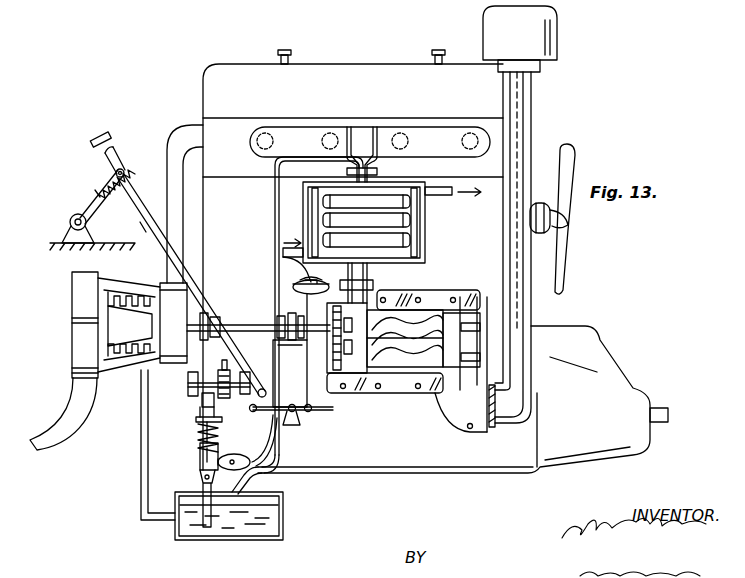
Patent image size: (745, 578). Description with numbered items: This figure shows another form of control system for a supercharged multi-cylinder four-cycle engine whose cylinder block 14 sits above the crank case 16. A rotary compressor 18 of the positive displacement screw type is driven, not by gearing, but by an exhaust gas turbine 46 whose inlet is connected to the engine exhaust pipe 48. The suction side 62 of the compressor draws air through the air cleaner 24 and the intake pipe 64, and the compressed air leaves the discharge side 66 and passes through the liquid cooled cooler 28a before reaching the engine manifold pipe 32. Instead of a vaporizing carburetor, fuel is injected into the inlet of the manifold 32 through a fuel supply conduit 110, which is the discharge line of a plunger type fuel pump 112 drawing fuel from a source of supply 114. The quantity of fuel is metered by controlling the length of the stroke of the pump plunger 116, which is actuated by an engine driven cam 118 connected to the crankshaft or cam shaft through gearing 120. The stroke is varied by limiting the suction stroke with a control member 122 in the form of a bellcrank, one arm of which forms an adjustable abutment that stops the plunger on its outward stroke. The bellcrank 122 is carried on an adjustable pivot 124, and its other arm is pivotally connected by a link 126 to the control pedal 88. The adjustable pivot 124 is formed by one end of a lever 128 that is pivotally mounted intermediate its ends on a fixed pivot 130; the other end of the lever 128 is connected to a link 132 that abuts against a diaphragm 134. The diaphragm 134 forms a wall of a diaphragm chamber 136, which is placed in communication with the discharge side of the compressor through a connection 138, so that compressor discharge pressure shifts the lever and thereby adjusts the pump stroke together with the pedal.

The cylinder block 14 is at (205, 242).
The crank case 16 is at (373, 469).
The rotary compressor 18 is at (408, 394).
The air cleaner 24 is at (558, 38).
The cooler 28a is at (426, 222).
The manifold pipe 32 is at (376, 125).
The exhaust gas turbine 46 is at (128, 366).
The exhaust pipe 48 is at (178, 140).
The suction side 62 is at (470, 405).
The intake pipe 64 is at (522, 352).
The discharge side 66 is at (372, 303).
The control pedal 88 is at (126, 162).
The fuel supply conduit 110 is at (273, 193).
The plunger type fuel pump 112 is at (200, 464).
The source of supply 114 is at (265, 530).
The pump plunger 116 is at (197, 438).
The engine driven cam 118 is at (203, 398).
The gearing 120 is at (224, 372).
The control member 122 is at (242, 412).
The adjustable pivot 124 is at (272, 443).
The link 126 is at (200, 300).
The lever 128 is at (285, 400).
The fixed pivot 130 is at (300, 428).
The link 132 is at (315, 397).
The diaphragm 134 is at (291, 292).
The diaphragm chamber 136 is at (305, 279).
The connection 138 is at (305, 271).